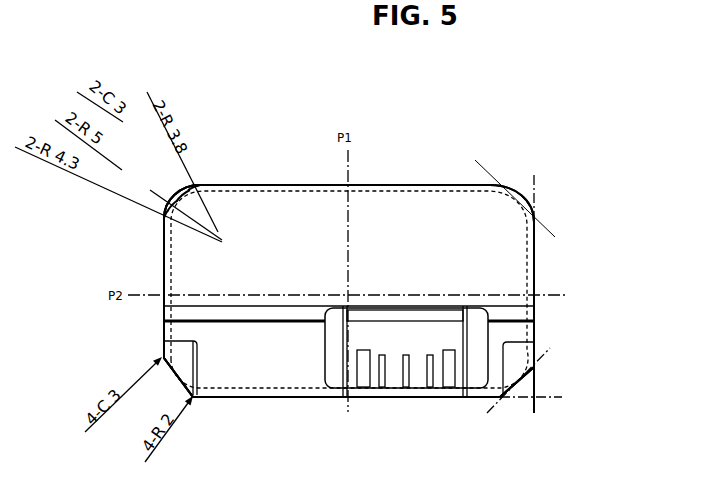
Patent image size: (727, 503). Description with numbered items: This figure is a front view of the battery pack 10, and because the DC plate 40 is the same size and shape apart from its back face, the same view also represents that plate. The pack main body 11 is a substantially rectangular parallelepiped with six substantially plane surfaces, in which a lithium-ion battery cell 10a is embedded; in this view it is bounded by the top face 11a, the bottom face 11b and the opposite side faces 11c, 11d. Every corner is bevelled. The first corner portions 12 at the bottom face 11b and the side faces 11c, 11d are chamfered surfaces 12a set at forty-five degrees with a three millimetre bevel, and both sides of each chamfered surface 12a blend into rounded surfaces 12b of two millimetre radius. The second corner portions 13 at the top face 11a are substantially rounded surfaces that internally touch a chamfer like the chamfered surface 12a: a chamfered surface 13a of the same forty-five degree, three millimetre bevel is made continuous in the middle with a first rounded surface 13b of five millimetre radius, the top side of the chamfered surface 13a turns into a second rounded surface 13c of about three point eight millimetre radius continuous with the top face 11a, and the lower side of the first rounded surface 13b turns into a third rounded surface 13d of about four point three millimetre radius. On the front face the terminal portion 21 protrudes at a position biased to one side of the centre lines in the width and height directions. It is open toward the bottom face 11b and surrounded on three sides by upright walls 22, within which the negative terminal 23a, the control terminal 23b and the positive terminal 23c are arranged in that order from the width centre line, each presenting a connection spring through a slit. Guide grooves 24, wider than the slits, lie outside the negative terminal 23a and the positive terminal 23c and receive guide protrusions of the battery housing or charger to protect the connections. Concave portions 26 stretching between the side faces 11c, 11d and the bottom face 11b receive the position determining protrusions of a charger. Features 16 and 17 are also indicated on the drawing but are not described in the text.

The battery pack 10 is at (460, 160).
The DC plate 40 is at (349, 291).
The battery cell 10a is at (537, 268).
The pack main body 11 is at (619, 227).
The top face 11a is at (406, 184).
The bottom face 11b is at (300, 399).
The side face 11c is at (537, 340).
The side face 11d is at (163, 262).
The first corner portion 12 is at (548, 390).
The chamfered surface 12a is at (172, 378).
The rounded surface 12b is at (155, 351).
The second corner portion 13 is at (143, 125).
The chamfered surface 13a is at (177, 192).
The first rounded surface 13b is at (167, 202).
The second rounded surface 13c is at (203, 180).
The third rounded surface 13d is at (159, 222).
The partition wall 16 is at (537, 322).
The chamfer line 17 is at (537, 241).
The terminal portion 21 is at (337, 412).
The upright walls 22 is at (474, 318).
The negative terminal 23a is at (381, 388).
The control terminal 23b is at (406, 388).
The positive terminal 23c is at (430, 388).
The guide grooves 24 is at (363, 388).
The concave portions 26 is at (187, 354).